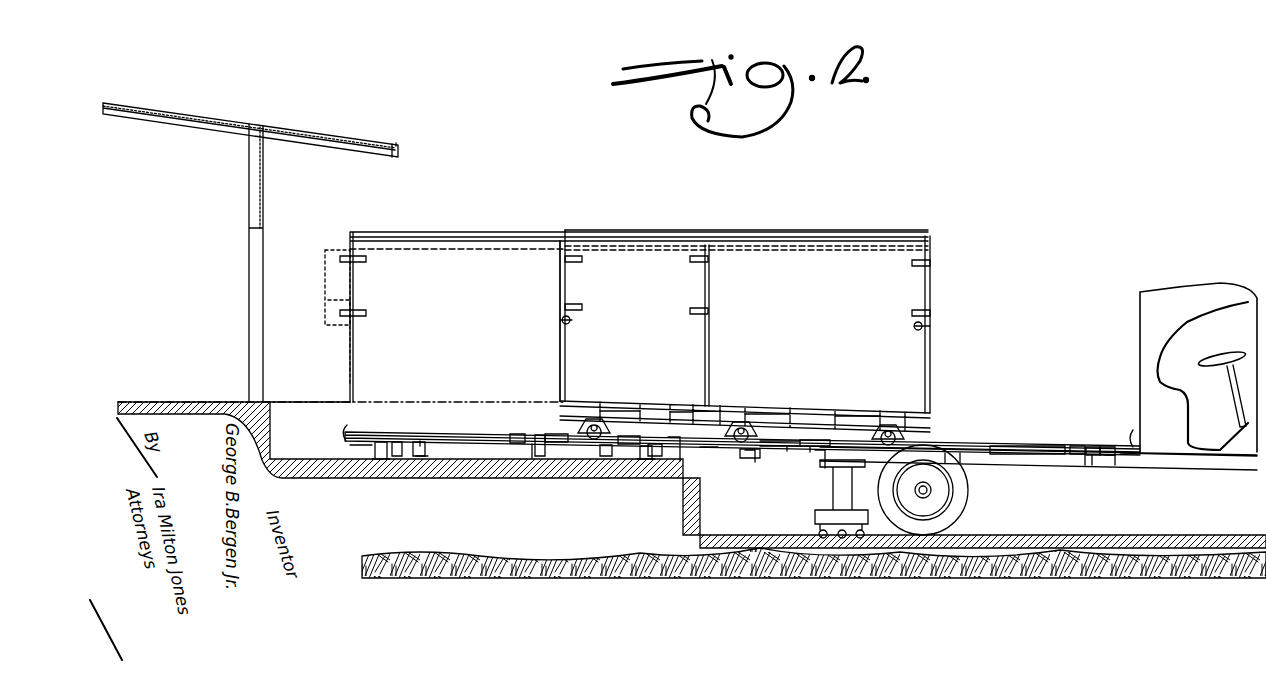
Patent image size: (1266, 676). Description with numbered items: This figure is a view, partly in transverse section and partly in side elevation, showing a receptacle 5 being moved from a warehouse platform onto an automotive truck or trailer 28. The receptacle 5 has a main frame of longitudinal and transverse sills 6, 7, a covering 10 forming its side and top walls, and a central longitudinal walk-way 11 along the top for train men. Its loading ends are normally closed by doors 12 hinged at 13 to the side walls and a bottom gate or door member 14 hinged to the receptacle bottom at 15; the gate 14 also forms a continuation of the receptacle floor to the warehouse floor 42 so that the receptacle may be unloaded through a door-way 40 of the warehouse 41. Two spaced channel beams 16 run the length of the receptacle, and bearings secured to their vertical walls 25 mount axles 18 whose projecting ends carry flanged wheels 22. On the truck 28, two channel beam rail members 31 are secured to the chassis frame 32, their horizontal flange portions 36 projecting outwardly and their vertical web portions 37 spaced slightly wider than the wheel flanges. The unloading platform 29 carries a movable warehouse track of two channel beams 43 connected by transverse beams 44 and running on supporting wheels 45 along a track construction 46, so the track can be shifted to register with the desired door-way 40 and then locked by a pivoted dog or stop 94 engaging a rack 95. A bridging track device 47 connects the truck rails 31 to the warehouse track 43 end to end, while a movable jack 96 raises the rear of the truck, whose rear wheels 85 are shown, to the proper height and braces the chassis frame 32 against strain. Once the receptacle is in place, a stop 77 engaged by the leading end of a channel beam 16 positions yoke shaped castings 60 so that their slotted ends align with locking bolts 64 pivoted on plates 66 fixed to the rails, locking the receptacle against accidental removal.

The receptacle 5 is at (760, 290).
The longitudinal sills 6 is at (790, 438).
The transverse sills 7 is at (662, 414).
The covering 10 is at (832, 355).
The central longitudinal walk-way 11 is at (905, 222).
The doors 12 is at (325, 278).
The hinge 13 is at (345, 295).
The bottom gate or door member 14 is at (292, 398).
The hinge 15 is at (345, 414).
The channel beams 16 is at (620, 412).
The axles or shafts 18 is at (745, 434).
The flanged wheels 22 is at (590, 419).
The vertical wall 25 is at (815, 438).
The automotive truck or trailer 28 is at (1150, 292).
The unloading platform 29 is at (334, 462).
The channel beam rail members 31 is at (1078, 446).
The chassis frame 32 is at (1028, 468).
The horizontal or flange portions 36 is at (1040, 446).
The vertical web portions 37 is at (1092, 446).
The door-way 40 is at (250, 252).
The warehouse 41 is at (222, 98).
The floor 42 is at (150, 402).
The channel beams 43 is at (420, 456).
The transverse beams 44 is at (398, 456).
The supporting wheels 45 is at (370, 446).
The track construction 46 is at (381, 459).
The bridging track device 47 is at (755, 458).
The yoke shaped castings 60 is at (560, 434).
The locking bolts 64 is at (515, 441).
The plates or castings 66 is at (540, 456).
The stop 77 is at (350, 428).
The rear wheels 85 is at (940, 525).
The pivoted dog or stop 94 is at (420, 440).
The rack 95 is at (425, 458).
The movable jack 96 is at (838, 490).